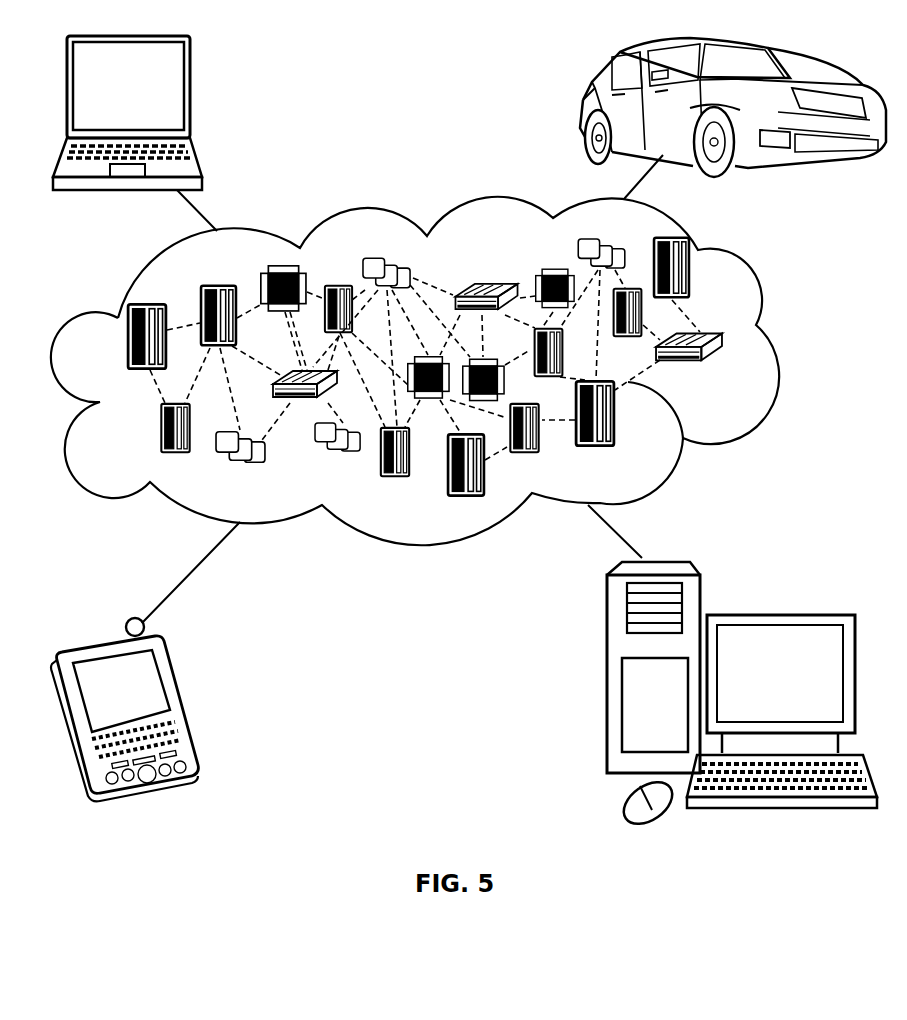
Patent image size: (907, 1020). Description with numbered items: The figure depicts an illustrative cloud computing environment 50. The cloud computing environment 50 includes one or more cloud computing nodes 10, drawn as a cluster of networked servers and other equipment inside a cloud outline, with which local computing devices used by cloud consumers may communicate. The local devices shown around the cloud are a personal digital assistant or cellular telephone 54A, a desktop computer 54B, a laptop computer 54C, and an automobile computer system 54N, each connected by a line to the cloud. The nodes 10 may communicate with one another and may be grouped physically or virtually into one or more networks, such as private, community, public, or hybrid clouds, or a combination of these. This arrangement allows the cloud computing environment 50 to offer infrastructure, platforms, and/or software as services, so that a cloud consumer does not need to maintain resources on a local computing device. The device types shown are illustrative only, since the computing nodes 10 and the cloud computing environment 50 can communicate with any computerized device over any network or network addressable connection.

The cloud computing node 10 is at (727, 375).
The cloud computing environment 50 is at (778, 347).
The personal digital assistant or cellular telephone 54A is at (180, 700).
The desktop computer 54B is at (777, 613).
The laptop computer 54C is at (190, 92).
The automobile computer system 54N is at (584, 108).